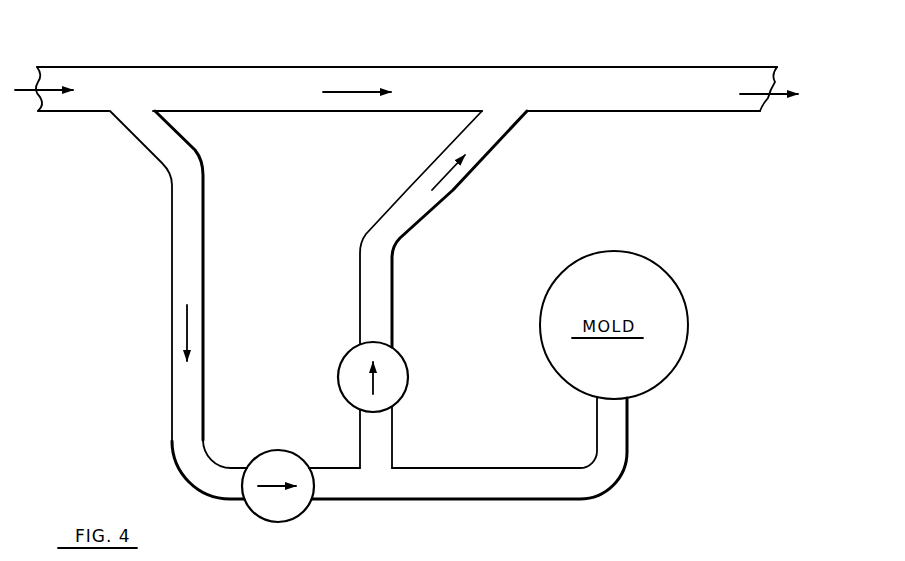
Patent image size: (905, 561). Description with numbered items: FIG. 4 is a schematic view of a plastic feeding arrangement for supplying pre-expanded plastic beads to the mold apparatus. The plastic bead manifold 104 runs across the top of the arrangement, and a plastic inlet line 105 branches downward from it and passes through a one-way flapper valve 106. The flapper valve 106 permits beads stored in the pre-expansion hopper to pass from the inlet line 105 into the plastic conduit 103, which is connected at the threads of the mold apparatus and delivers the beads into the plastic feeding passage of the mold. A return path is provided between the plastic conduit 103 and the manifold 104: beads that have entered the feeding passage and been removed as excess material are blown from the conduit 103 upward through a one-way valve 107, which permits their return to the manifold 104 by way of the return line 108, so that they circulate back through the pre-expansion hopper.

The plastic conduit 103 is at (557, 493).
The plastic bead manifold 104 is at (303, 80).
The plastic inlet line 105 is at (178, 334).
The one-way flapper valve 106 is at (297, 505).
The one-way valve 107 is at (405, 383).
The return line 108 is at (380, 282).